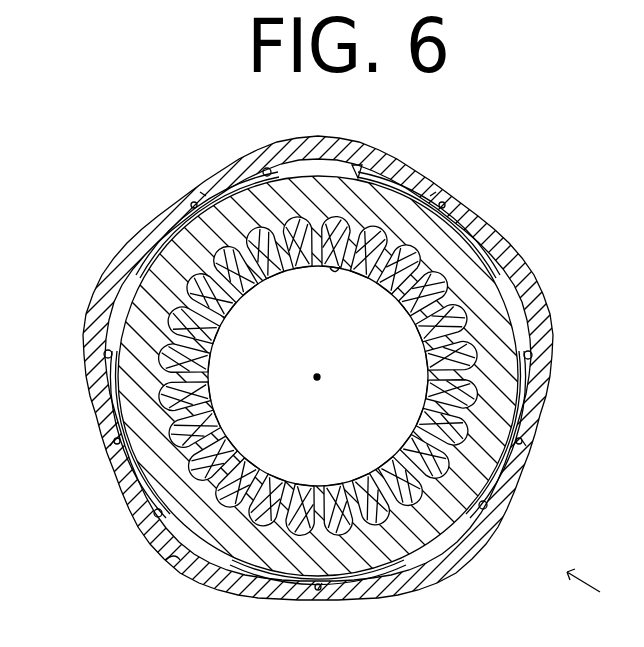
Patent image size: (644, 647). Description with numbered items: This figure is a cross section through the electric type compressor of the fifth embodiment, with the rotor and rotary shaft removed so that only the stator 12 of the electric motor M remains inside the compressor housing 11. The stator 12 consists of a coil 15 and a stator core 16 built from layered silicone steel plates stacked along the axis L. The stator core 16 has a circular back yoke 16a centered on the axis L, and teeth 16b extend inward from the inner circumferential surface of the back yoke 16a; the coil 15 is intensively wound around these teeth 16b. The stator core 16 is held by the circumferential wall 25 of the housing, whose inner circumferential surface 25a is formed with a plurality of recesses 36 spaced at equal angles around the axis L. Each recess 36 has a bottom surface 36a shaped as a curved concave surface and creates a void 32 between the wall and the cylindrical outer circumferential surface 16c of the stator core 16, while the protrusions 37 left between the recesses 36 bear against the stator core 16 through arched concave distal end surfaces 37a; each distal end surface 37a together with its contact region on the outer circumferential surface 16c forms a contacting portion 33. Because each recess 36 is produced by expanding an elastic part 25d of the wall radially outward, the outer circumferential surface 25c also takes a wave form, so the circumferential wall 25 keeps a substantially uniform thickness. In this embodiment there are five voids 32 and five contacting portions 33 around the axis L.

The compressor housing 11 is at (400, 157).
The stator 12 is at (358, 172).
The coil 15 is at (388, 440).
The stator core 16 is at (322, 379).
The back yoke 16a is at (526, 300).
The teeth 16b is at (336, 272).
The outer circumferential surface 16c is at (176, 560).
The circumferential wall 25 is at (322, 367).
The inner circumferential surface 25a is at (345, 598).
The outer circumferential surface 25c is at (520, 490).
The elastic part 25d is at (285, 140).
The void 32 is at (340, 162).
The contacting portion 33 is at (165, 218).
The recess 36 is at (268, 168).
The bottom surface 36a is at (289, 272).
The protrusion 37 is at (190, 205).
The distal end surface 37a is at (203, 195).
The axis L is at (314, 378).
The electric motor M is at (587, 593).